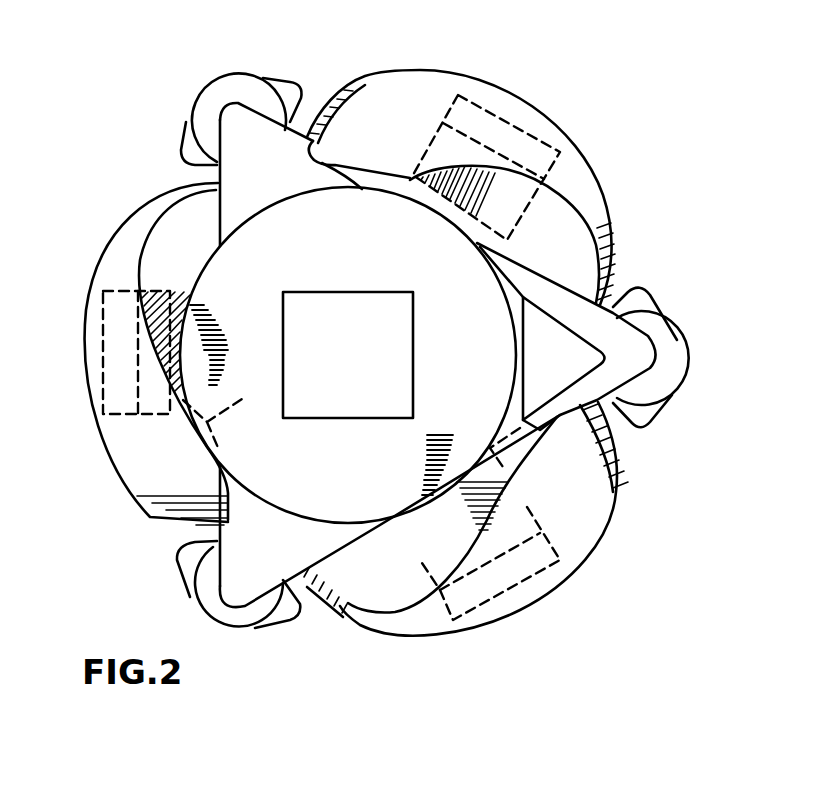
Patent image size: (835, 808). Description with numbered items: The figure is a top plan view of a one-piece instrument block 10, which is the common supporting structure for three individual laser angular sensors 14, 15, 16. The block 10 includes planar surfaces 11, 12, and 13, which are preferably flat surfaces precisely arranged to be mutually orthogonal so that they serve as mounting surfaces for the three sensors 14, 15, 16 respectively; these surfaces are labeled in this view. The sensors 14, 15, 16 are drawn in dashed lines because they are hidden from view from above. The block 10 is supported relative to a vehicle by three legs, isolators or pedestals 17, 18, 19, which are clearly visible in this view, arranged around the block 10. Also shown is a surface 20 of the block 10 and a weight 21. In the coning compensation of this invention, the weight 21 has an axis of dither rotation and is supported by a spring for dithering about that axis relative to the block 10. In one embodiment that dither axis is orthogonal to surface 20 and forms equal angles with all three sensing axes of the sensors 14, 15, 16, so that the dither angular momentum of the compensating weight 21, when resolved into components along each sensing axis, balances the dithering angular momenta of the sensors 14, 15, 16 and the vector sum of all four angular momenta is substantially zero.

The instrument block 10 is at (648, 238).
The planar surface 11 is at (132, 498).
The planar surface 12 is at (597, 540).
The planar surface 13 is at (598, 153).
The laser angular sensor 14 is at (103, 327).
The laser angular sensor 15 is at (532, 588).
The laser angular sensor 16 is at (530, 118).
The leg, isolator or pedestal 17 is at (200, 601).
The leg, isolator or pedestal 18 is at (675, 345).
The leg, isolator or pedestal 19 is at (197, 129).
The surface 20 is at (348, 355).
The weight 21 is at (397, 323).